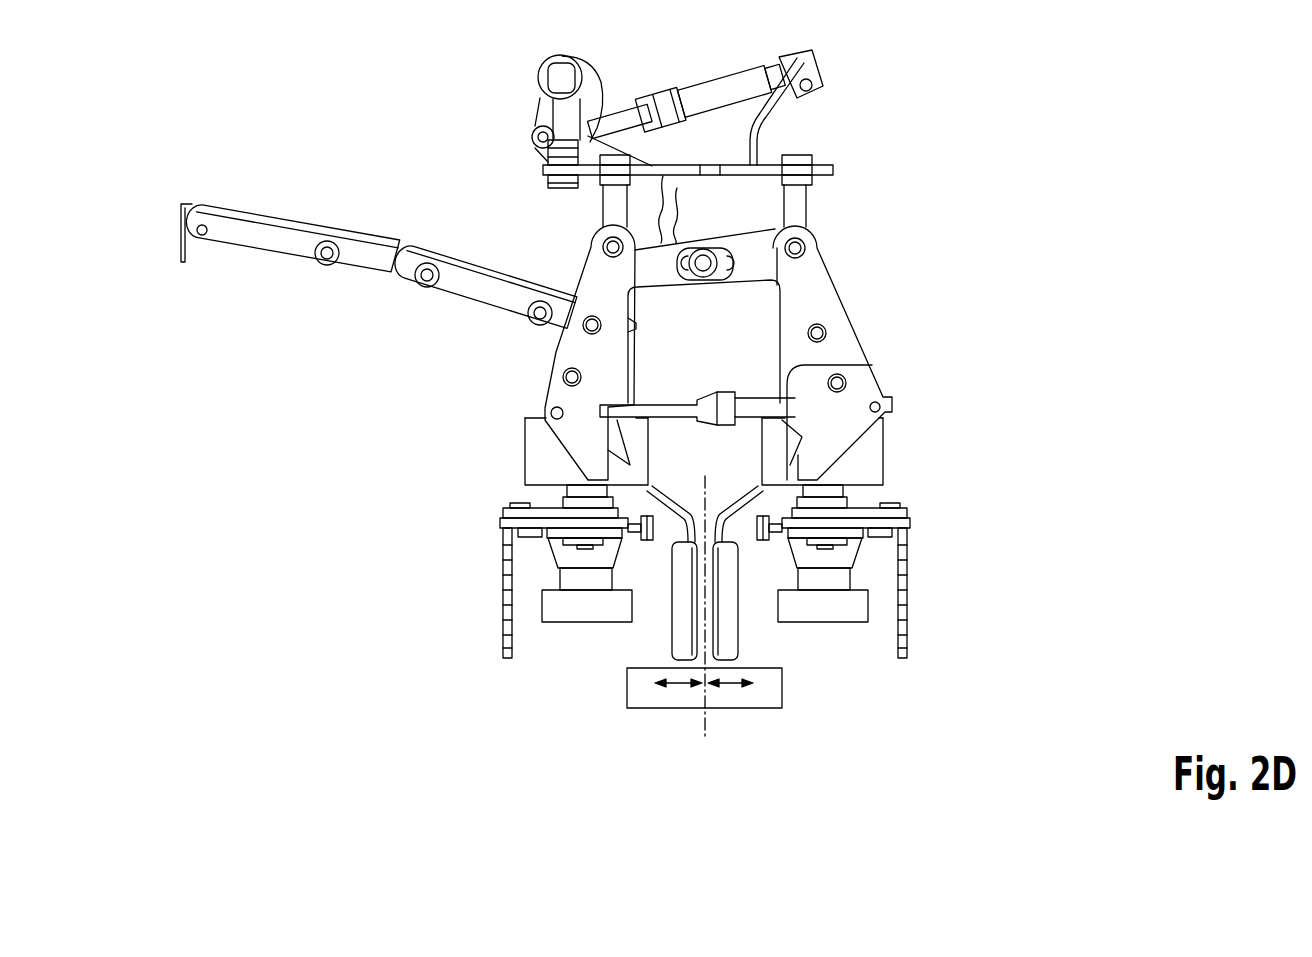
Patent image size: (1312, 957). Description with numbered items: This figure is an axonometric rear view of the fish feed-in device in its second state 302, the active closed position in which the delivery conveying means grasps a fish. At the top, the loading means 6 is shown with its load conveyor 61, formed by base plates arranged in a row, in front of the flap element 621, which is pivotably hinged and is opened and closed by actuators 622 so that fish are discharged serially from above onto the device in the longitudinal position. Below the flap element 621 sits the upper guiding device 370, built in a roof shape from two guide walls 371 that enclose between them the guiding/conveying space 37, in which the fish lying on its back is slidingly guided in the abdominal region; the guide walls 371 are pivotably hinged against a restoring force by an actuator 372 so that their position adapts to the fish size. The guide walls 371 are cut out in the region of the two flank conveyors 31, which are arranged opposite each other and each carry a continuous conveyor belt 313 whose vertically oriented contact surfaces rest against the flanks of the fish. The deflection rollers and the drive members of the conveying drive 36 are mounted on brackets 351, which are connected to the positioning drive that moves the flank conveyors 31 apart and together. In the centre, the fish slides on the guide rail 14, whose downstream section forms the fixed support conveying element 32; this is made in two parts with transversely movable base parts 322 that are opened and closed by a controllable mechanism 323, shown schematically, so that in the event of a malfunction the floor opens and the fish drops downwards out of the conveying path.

The second state 302 is at (132, 56).
The loading means 6 is at (346, 150).
The load conveyor 61 is at (250, 283).
The actuators 622 is at (724, 111).
The flap element 621 is at (678, 205).
The upper guiding device 370 is at (535, 342).
The guiding/conveying space 37 is at (760, 368).
The guide walls 371 is at (780, 343).
The actuator 372 is at (778, 407).
The conveyor belt 313 is at (525, 420).
The flank conveyors 31 is at (525, 462).
The brackets 351 is at (543, 505).
The conveying drive 36 is at (560, 622).
The base parts 322 is at (668, 488).
The support conveying element 32 is at (705, 601).
The guide rail 14 is at (717, 468).
The mechanism 323 is at (657, 708).